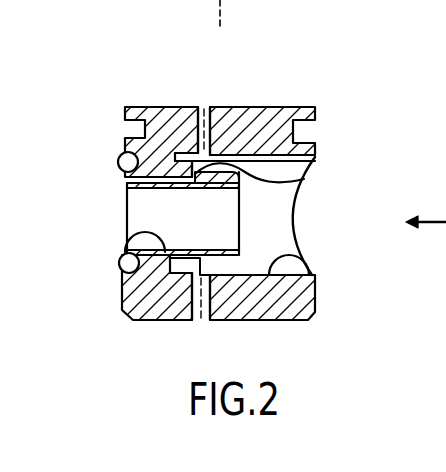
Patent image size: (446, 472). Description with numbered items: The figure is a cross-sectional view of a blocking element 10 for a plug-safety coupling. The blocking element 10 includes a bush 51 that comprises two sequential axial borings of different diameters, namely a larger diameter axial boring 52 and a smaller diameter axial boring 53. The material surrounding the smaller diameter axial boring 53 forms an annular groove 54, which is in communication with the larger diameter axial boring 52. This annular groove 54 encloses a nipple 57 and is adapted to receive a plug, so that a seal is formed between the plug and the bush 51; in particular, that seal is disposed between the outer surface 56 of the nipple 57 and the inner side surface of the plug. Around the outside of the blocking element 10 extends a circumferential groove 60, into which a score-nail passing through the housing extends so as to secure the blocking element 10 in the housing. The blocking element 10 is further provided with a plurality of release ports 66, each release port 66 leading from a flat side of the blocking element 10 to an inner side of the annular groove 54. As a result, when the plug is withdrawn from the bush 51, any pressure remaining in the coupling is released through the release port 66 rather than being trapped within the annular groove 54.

The blocking element 10 is at (269, 92).
The bush 51 is at (283, 217).
The larger diameter axial boring 52 is at (312, 268).
The smaller diameter axial boring 53 is at (132, 232).
The annular groove 54 is at (181, 156).
The outer surface 56 is at (300, 181).
The nipple 57 is at (182, 194).
The circumferential groove 60 is at (126, 121).
The release port 66 is at (211, 105).